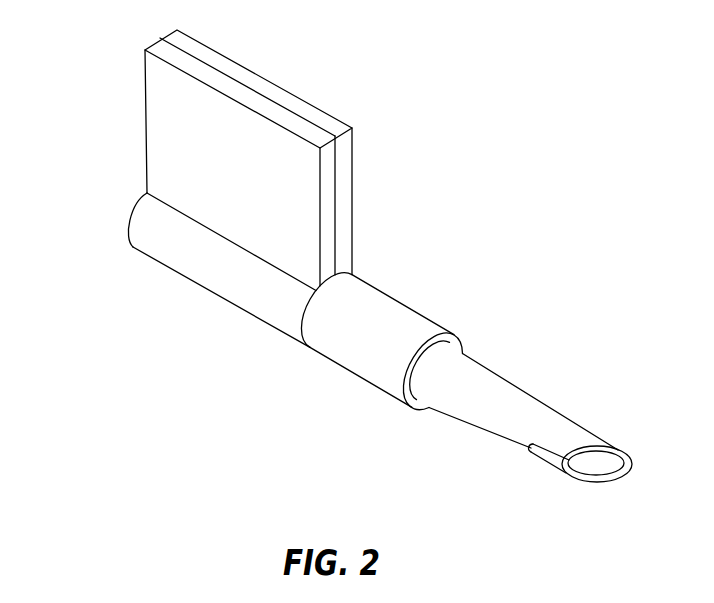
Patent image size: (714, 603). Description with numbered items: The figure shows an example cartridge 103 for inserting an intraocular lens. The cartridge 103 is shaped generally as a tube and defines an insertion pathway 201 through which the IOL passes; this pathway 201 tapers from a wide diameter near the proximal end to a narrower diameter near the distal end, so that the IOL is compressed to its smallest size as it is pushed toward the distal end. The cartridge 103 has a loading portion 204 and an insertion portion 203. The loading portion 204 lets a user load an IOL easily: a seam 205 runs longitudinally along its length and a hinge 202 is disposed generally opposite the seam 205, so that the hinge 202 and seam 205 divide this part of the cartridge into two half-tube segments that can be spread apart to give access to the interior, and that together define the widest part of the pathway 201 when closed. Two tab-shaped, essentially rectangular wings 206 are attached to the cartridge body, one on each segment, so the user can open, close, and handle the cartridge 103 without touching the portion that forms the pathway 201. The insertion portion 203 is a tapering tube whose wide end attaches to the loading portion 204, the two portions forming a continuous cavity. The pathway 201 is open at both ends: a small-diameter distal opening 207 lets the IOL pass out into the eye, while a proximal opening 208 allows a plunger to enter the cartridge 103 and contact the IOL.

The cartridge 103 is at (560, 122).
The insertion pathway 201 is at (595, 467).
The hinge 202 is at (240, 308).
The insertion portion 203 is at (512, 370).
The loading portion 204 is at (165, 285).
The seam 205 is at (352, 274).
The wing 206 is at (263, 90).
The distal opening 207 is at (620, 452).
The proximal opening 208 is at (130, 223).